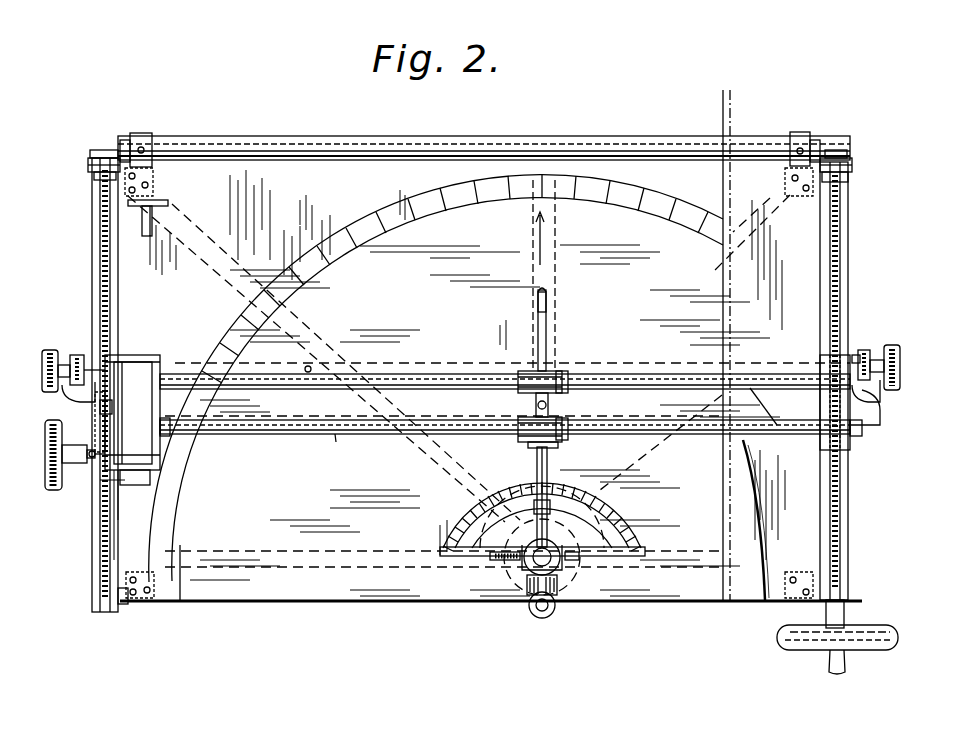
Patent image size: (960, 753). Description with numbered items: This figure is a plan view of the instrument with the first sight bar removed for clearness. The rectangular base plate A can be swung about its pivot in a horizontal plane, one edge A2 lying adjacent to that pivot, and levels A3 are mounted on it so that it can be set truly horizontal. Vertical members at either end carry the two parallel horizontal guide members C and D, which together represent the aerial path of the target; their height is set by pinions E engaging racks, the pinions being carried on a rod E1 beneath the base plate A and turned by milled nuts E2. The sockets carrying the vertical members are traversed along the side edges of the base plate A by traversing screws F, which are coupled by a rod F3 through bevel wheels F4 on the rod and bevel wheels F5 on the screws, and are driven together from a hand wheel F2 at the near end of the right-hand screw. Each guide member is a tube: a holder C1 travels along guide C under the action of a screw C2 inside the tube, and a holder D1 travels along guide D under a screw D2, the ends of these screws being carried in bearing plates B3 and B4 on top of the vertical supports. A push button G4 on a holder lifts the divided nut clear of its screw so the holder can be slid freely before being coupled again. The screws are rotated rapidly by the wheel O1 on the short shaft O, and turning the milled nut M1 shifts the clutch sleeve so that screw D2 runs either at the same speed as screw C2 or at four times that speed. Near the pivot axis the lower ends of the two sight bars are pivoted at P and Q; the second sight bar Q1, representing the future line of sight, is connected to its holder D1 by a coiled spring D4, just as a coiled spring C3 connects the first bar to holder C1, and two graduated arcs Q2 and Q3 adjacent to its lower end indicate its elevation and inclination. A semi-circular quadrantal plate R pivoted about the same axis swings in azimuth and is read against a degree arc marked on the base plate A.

The base plate A is at (693, 178).
The edge of base plate A2 is at (206, 602).
The levels A3 is at (140, 236).
The bearing plate B3 is at (858, 398).
The bearing plate B4 is at (160, 405).
The first guide member C is at (690, 435).
The holder C1 is at (568, 430).
The traversing screw C2 is at (336, 437).
The coiled spring C3 is at (560, 440).
The second guide member D is at (645, 375).
The holder D1 is at (562, 371).
The traversing screw D2 is at (306, 373).
The coiled spring D4 is at (518, 390).
The pinion E is at (78, 354).
The rod E1 is at (692, 372).
The milled nuts E2 is at (50, 350).
The traversing screw F is at (104, 263).
The hand wheel F2 is at (870, 632).
The rod F3 is at (612, 152).
The bevel wheels F4 is at (124, 135).
The bevel wheels F5 is at (90, 160).
The push button G4 is at (538, 372).
The milled nut M1 is at (128, 358).
The short shaft O is at (95, 460).
The wheel O1 is at (58, 470).
The pivot P is at (536, 608).
The pivot Q is at (528, 568).
The sight bar Q1 is at (540, 320).
The graduated arc Q2 is at (630, 512).
The graduated arc Q3 is at (556, 574).
The quadrantal plate R is at (402, 256).